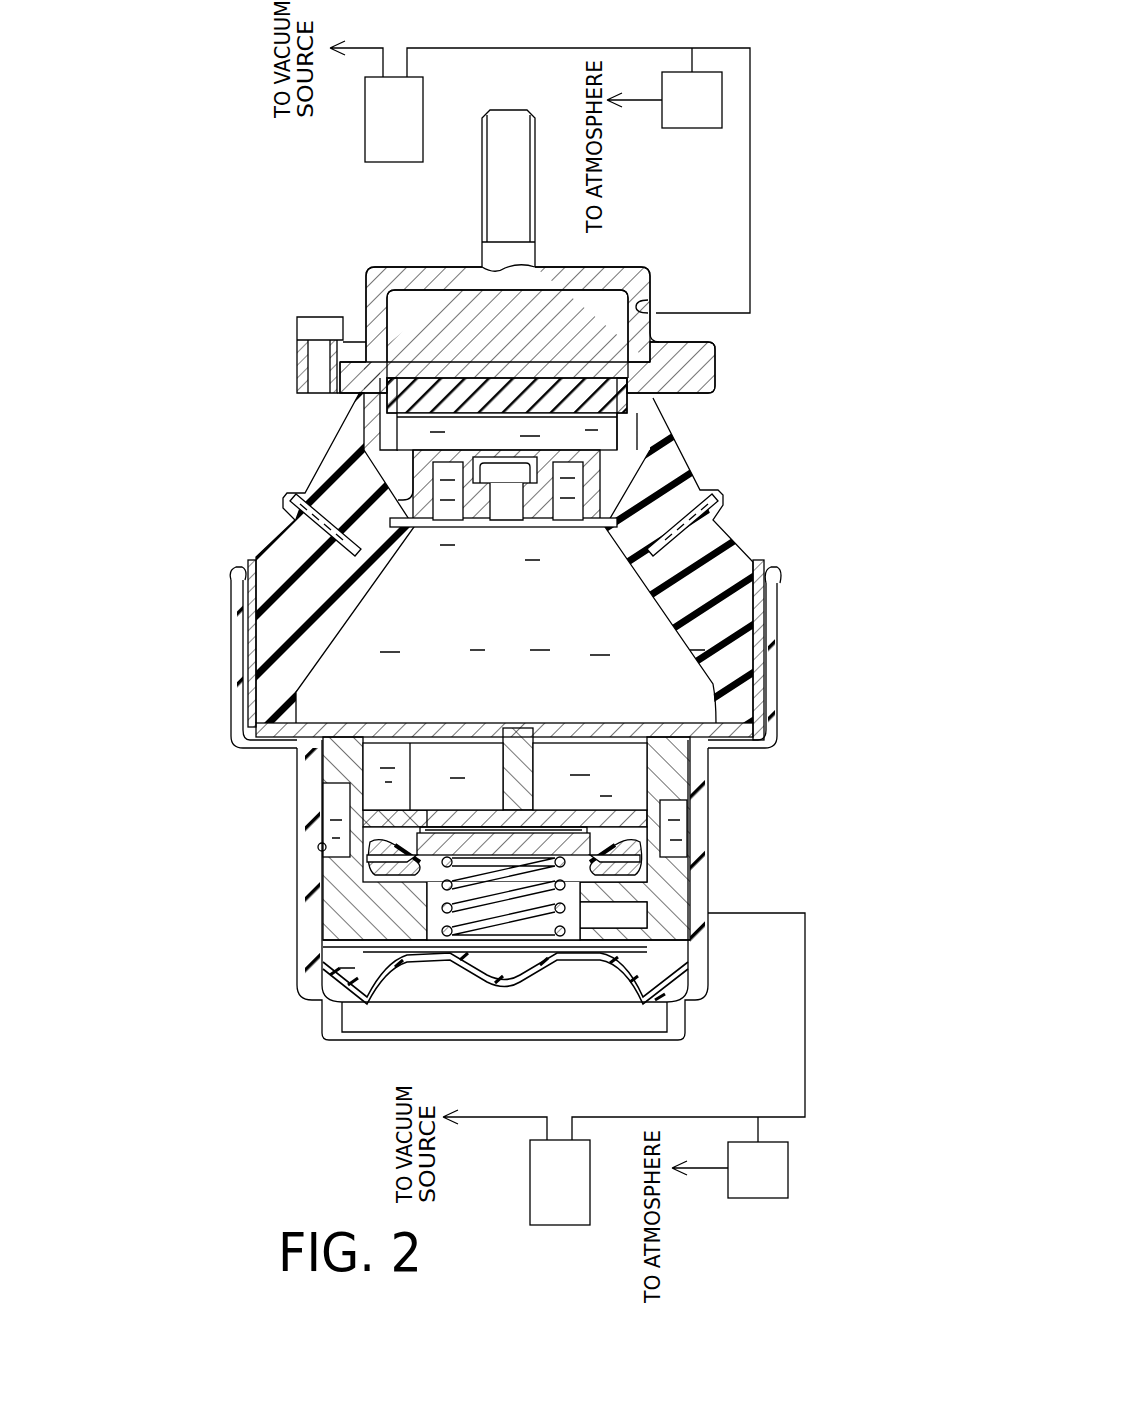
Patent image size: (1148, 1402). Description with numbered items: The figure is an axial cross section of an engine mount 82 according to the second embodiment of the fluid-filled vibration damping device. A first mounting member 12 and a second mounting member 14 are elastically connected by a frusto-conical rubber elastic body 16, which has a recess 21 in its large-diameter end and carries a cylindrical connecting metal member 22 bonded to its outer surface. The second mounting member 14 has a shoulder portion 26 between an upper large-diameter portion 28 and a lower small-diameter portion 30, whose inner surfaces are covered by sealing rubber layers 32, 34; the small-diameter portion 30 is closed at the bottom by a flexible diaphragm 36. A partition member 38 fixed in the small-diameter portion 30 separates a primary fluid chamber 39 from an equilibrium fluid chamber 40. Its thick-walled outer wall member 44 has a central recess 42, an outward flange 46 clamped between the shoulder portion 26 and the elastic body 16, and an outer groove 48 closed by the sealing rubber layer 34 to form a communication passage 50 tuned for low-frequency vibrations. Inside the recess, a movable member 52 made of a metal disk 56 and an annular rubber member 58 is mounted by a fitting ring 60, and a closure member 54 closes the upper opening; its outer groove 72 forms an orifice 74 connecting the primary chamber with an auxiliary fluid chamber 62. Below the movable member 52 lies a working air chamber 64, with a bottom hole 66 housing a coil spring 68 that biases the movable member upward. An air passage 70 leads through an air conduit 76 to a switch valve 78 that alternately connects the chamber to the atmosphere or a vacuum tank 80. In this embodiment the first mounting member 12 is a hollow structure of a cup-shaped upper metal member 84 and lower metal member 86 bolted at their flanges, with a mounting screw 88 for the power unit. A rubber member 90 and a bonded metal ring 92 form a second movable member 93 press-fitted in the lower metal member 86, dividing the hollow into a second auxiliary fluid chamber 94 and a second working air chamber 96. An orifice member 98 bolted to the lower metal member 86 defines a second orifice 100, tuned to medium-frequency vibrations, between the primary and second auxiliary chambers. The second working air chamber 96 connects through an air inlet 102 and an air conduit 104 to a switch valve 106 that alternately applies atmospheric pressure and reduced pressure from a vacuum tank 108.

The first mounting member 12 is at (330, 300).
The second mounting member 14 is at (215, 697).
The elastic body 16 is at (296, 556).
The recess 21 is at (360, 600).
The connecting metal member 22 is at (758, 625).
The shoulder portion 26 is at (742, 744).
The large-diameter portion 28 is at (231, 648).
The small-diameter portion 30 is at (300, 866).
The sealing rubber layer 32 is at (767, 703).
The sealing rubber layer 34 is at (697, 862).
The flexible diaphragm 36 is at (410, 963).
The partition member 38 is at (649, 692).
The primary fluid chamber 39 is at (411, 563).
The equilibrium fluid chamber 40 is at (645, 975).
The central recess 42 is at (367, 763).
The outer wall member 44 is at (337, 907).
The outward flange 46 is at (280, 732).
The outer groove 48 is at (318, 843).
The communication passage 50 is at (677, 816).
The movable member 52 is at (477, 812).
The closure member 54 is at (425, 733).
The metal disk 56 is at (537, 840).
The annular rubber member 58 is at (330, 964).
The fitting ring 60 is at (637, 873).
The auxiliary fluid chamber 62 is at (627, 797).
The working air chamber 64 is at (433, 925).
The bottom hole 66 is at (537, 935).
The coil spring 68 is at (493, 925).
The air passage 70 is at (677, 958).
The outer groove 72 is at (407, 755).
The orifice 74 is at (383, 800).
The air conduit 76 is at (781, 890).
The switch valve 78 is at (748, 1183).
The vacuum tank 80 is at (543, 1163).
The engine mount 82 is at (262, 225).
The upper metal member 84 is at (440, 270).
The lower metal member 86 is at (368, 421).
The mounting screw 88 is at (497, 135).
The rubber member 90 is at (590, 375).
The metal ring 92 is at (632, 390).
The second movable member 93 is at (775, 335).
The second auxiliary fluid chamber 94 is at (600, 433).
The second working air chamber 96 is at (407, 310).
The orifice member 98 is at (423, 480).
The second orifice 100 is at (567, 482).
The air inlet 102 is at (664, 308).
The air conduit 104 is at (766, 188).
The switch valve 106 is at (676, 118).
The vacuum tank 108 is at (375, 116).